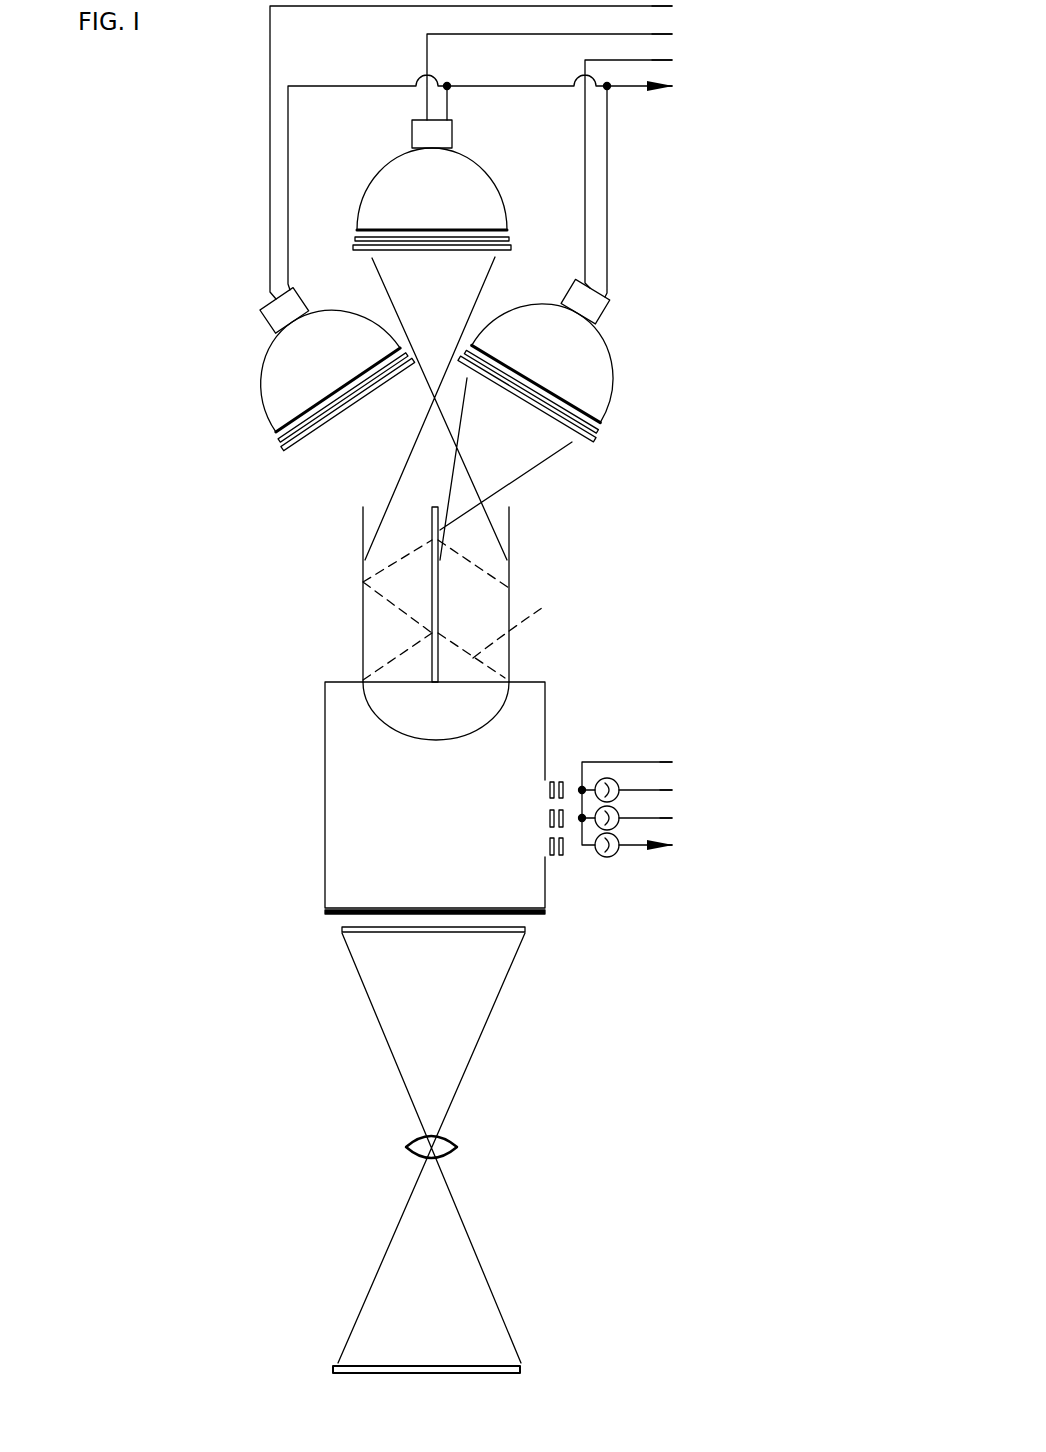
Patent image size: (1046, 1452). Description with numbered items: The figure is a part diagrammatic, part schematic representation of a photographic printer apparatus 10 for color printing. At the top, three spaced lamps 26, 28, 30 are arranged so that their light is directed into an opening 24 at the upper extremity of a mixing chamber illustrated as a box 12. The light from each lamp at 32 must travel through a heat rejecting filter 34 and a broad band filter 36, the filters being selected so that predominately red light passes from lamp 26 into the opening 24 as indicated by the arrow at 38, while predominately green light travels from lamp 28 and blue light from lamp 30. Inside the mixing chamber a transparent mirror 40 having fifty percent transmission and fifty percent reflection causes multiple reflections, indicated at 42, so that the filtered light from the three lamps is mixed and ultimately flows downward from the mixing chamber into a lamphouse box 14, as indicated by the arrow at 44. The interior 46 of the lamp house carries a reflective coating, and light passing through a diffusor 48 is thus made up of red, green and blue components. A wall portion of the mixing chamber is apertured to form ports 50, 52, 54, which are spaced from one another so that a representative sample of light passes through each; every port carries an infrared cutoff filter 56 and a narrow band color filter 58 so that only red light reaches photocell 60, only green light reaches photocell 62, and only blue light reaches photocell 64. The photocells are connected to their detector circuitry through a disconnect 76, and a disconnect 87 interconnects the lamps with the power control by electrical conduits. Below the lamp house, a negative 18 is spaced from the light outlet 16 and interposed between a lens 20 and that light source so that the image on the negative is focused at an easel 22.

The photographic printer apparatus 10 is at (559, 638).
The mixing chamber box 12 is at (431, 621).
The lamphouse box 14 is at (552, 679).
The light outlet 16 is at (333, 920).
The negative 18 is at (402, 933).
The lens 20 is at (453, 1140).
The easel 22 is at (393, 1367).
The opening 24 is at (512, 503).
The lamp 26 is at (270, 375).
The lamp 28 is at (468, 167).
The lamp 30 is at (600, 378).
The lamp light output 32 is at (398, 231).
The heat rejecting filter 34 is at (423, 241).
The broad band filter 36 is at (445, 250).
The arrow 38 is at (410, 514).
The transparent mirror 40 is at (439, 608).
The multiple reflections 42 is at (523, 626).
The arrow 44 is at (361, 733).
The interior of lamp house 46 is at (325, 813).
The diffusor 48 is at (345, 908).
The port 50 is at (540, 780).
The port 52 is at (548, 802).
The port 54 is at (543, 855).
The infrared cutoff filter 56 is at (548, 820).
The narrow band color filter 58 is at (565, 850).
The photocell 60 is at (612, 780).
The photocell 62 is at (617, 808).
The photocell 64 is at (617, 853).
The disconnect 76 is at (707, 781).
The disconnect 87 is at (684, 103).